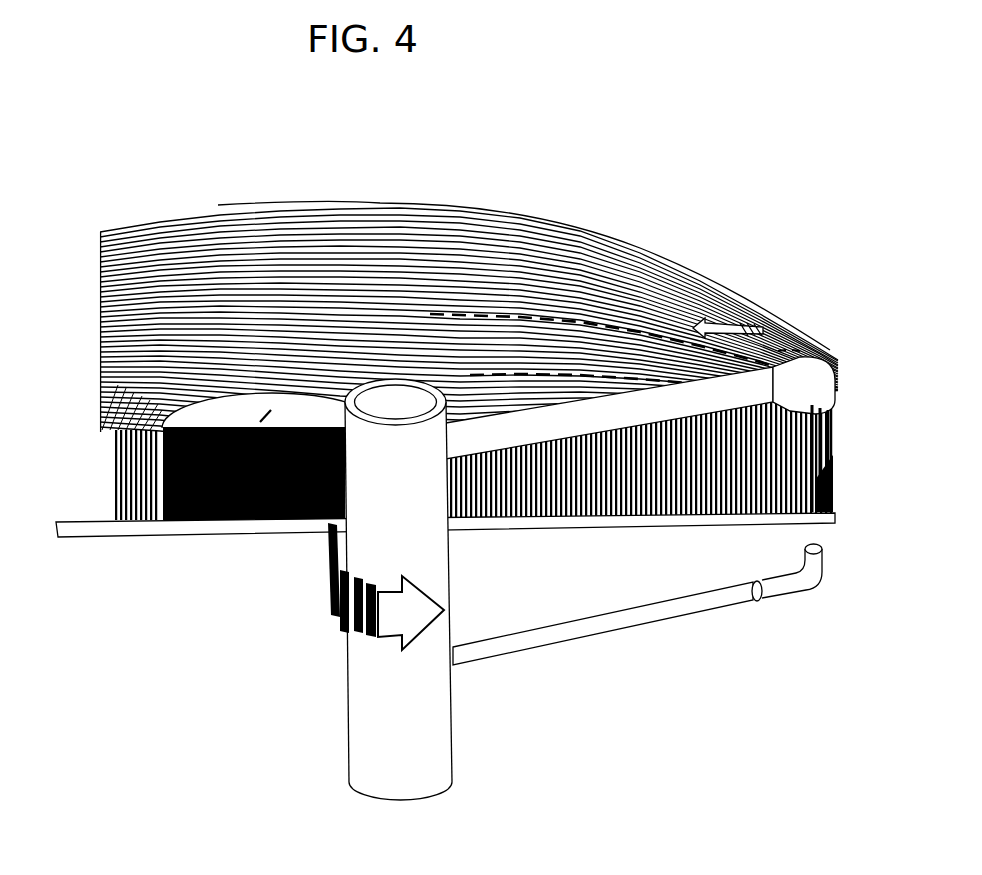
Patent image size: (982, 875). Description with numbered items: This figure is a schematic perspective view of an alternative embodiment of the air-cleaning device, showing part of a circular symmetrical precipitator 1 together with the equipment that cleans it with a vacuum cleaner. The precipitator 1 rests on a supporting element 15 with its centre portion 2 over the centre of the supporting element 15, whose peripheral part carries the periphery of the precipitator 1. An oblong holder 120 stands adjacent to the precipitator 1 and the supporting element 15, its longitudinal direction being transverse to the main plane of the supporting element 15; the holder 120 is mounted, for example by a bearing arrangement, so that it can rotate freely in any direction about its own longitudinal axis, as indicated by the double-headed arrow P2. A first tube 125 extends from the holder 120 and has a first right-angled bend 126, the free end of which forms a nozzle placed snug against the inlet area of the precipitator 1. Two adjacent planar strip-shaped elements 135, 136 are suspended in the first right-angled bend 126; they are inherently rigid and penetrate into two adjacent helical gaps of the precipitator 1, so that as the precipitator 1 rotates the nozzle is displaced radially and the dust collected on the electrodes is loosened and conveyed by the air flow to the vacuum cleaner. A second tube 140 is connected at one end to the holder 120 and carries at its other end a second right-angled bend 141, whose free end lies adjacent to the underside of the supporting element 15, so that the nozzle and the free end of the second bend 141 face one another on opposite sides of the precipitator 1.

The precipitator 1 is at (690, 263).
The centre portion 2 is at (218, 522).
The supporting element 15 is at (134, 543).
The holder 120 is at (464, 724).
The first tube 125 is at (508, 428).
The first right-angled bend 126 is at (792, 375).
The planar strip-shaped element 135 is at (723, 495).
The planar strip-shaped element 136 is at (792, 477).
The second tube 140 is at (628, 620).
The second right-angled bend 141 is at (812, 556).
The double-headed arrow P2 is at (322, 552).